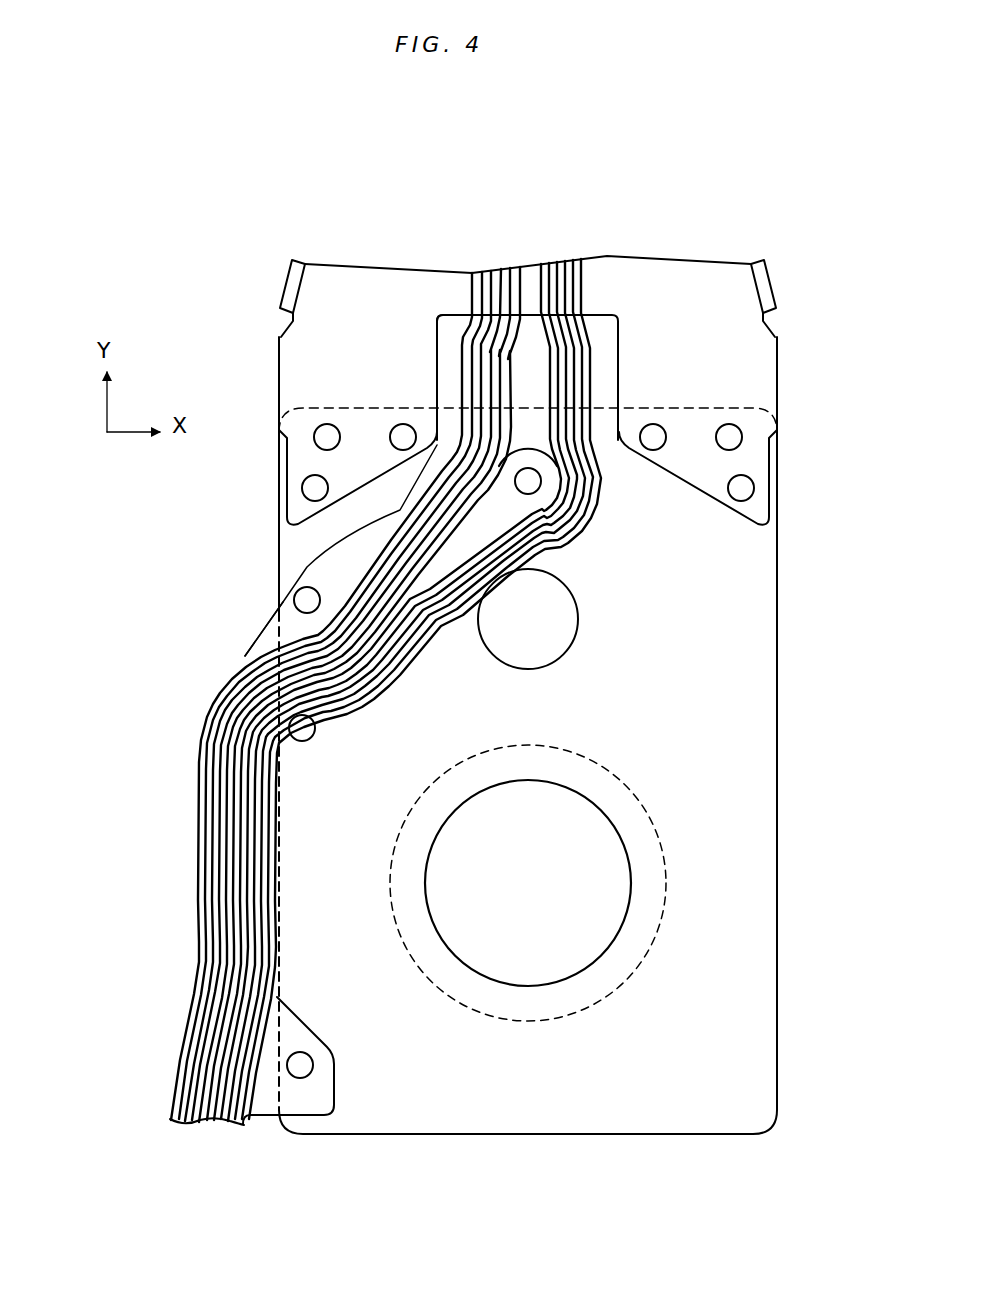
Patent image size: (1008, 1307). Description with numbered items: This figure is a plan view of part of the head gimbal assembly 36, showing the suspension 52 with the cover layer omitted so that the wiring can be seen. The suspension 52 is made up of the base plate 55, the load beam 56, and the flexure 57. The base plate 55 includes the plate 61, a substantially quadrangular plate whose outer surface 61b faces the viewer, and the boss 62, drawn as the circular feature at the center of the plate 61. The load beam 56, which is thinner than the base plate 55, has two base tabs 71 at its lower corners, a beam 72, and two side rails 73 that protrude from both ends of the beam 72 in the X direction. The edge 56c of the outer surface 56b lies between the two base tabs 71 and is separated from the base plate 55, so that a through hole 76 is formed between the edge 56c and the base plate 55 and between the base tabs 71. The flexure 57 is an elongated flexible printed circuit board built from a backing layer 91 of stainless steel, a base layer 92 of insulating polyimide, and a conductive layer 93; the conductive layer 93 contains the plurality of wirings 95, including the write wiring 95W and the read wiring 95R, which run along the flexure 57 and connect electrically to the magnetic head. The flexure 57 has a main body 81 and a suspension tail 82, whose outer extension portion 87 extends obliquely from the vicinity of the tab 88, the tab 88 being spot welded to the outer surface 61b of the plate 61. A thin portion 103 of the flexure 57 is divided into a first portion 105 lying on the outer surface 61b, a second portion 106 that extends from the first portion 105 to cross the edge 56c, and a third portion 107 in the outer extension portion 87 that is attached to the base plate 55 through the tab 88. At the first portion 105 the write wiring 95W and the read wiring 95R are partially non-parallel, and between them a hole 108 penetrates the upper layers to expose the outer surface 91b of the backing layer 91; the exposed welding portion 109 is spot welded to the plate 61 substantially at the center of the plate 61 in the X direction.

The head gimbal assembly 36 is at (211, 390).
The suspension 52 is at (206, 223).
The base plate 55 is at (584, 735).
The load beam 56 is at (563, 267).
The outer surface 56b is at (563, 267).
The beam 72 is at (775, 271).
The edge 56c is at (600, 320).
The flexure 57 is at (589, 271).
The plate 61 is at (584, 735).
The outer surface 61b is at (781, 663).
The boss 62 is at (666, 873).
The base tab 71 is at (300, 465).
The side rail 73 is at (291, 277).
The through hole 76 is at (443, 312).
The main body 81 is at (471, 270).
The suspension tail 82 is at (168, 1073).
The outer extension portion 87 is at (190, 1028).
The tab 88 is at (316, 1100).
The backing layer 91 is at (303, 550).
The outer surface 91b is at (283, 607).
The base layer 92 is at (262, 648).
The conductive layer 93 is at (279, 694).
The wiring 95 is at (279, 694).
The write wiring 95W is at (279, 694).
The read wiring 95R is at (237, 775).
The thin portion 103 is at (397, 659).
The second portion 106 is at (521, 268).
The first portion 105 is at (417, 560).
The third portion 107 is at (230, 845).
The hole 108 is at (541, 510).
The welding portion 109 is at (530, 482).